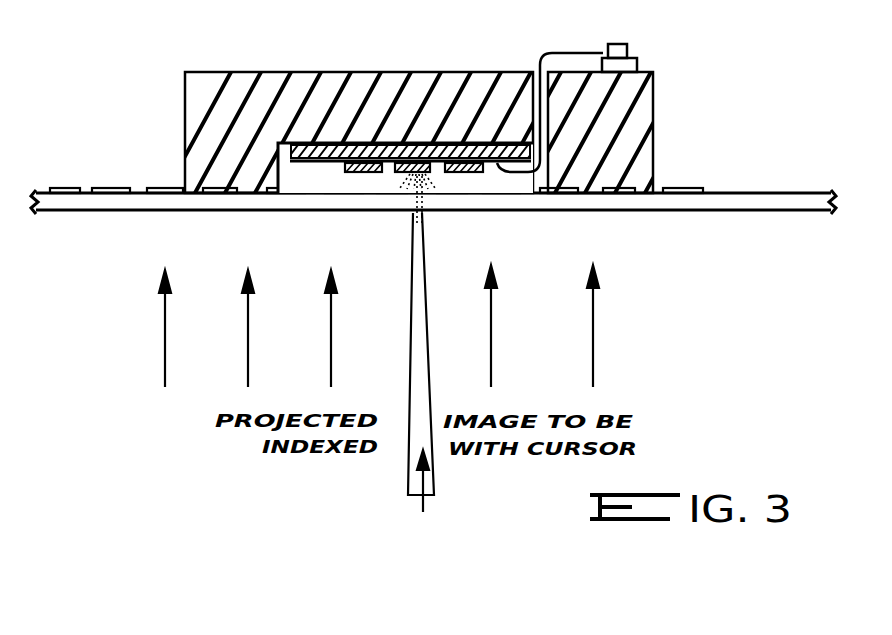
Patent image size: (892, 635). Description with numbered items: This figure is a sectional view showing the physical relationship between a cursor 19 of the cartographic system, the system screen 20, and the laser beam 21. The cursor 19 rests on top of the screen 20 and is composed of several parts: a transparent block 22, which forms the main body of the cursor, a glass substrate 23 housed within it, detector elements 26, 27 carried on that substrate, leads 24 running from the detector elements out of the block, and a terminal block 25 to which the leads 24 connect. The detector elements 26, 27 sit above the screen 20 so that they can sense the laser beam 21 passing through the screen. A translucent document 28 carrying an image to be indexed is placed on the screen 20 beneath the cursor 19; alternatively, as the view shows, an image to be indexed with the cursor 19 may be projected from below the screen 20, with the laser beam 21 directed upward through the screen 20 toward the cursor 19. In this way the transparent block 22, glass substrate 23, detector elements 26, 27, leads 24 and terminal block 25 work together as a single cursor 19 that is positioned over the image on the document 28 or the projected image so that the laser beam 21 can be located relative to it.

The cursor 19 is at (378, 64).
The screen 20 is at (745, 196).
The laser beam 21 is at (436, 470).
The transparent block 22 is at (222, 72).
The glass substrate 23 is at (483, 145).
The leads 24 is at (560, 52).
The terminal block 25 is at (630, 50).
The detector element 26 is at (405, 187).
The detector element 27 is at (360, 173).
The translucent document 28 is at (125, 188).